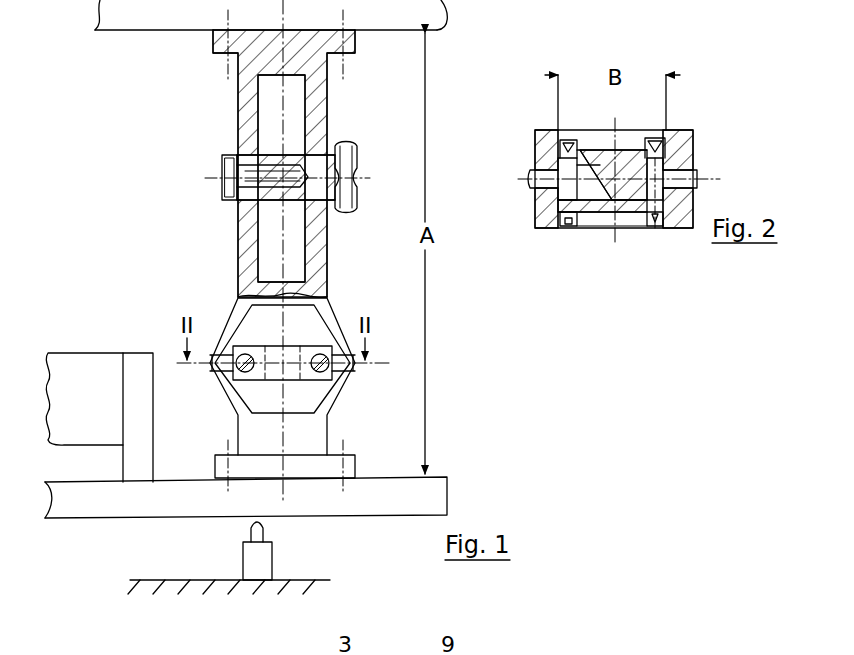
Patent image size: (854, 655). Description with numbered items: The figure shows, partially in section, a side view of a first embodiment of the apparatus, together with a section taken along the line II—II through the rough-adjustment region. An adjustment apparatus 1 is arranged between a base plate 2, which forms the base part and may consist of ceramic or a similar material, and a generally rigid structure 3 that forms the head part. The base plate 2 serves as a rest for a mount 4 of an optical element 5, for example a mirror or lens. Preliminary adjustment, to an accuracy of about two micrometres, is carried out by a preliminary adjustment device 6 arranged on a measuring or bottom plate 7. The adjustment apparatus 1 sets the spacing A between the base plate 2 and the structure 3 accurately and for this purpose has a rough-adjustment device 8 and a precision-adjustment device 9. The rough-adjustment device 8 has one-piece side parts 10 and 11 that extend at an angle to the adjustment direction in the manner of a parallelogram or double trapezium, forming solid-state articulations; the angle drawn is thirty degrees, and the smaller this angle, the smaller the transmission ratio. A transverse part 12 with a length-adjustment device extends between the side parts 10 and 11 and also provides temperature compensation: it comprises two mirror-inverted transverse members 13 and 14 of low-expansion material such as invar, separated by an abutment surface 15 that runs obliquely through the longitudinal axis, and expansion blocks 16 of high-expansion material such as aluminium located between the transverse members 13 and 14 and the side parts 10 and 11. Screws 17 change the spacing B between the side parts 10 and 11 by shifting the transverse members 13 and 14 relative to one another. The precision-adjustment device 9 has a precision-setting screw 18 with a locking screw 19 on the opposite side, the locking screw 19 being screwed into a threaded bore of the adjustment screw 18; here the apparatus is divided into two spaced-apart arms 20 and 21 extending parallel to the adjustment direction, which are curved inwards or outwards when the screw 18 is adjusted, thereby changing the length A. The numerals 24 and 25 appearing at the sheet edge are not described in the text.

In FIG. 1, the adjustment apparatus 1 is at (250, 250).
In FIG. 1, the base plate 2 is at (95, 516).
In FIG. 1, the structure 3 is at (100, 36).
In FIG. 1, the mount 4 is at (120, 447).
In FIG. 1, the optical element 5 is at (80, 370).
In FIG. 1, the preliminary adjustment device 6 is at (255, 566).
In FIG. 1, the bottom plate 7 is at (300, 578).
In FIG. 1, the rough-adjustment device 8 is at (333, 304).
In FIG. 1, the precision-adjustment device 9 is at (342, 150).
In FIG. 1, the side part 10 is at (350, 356).
In FIG. 1, the side part 11 is at (216, 345).
In FIG. 1, the transverse part 12 is at (250, 380).
In FIG. 2, the transverse part 12 is at (660, 243).
In FIG. 2, the transverse member 13 is at (545, 160).
In FIG. 2, the transverse member 14 is at (612, 135).
In FIG. 2, the abutment surface 15 is at (690, 132).
In FIG. 2, the expansion blocks 16 is at (555, 212).
In FIG. 2, the screws 17 is at (565, 235).
In FIG. 1, the precision-setting screw 18 is at (340, 188).
In FIG. 1, the locking screw 19 is at (225, 190).
In FIG. 1, the arm 20 is at (194, 156).
In FIG. 1, the arm 21 is at (308, 53).
In FIG. 1, the element 24 is at (672, 652).
In FIG. 1, the element 25 is at (553, 654).